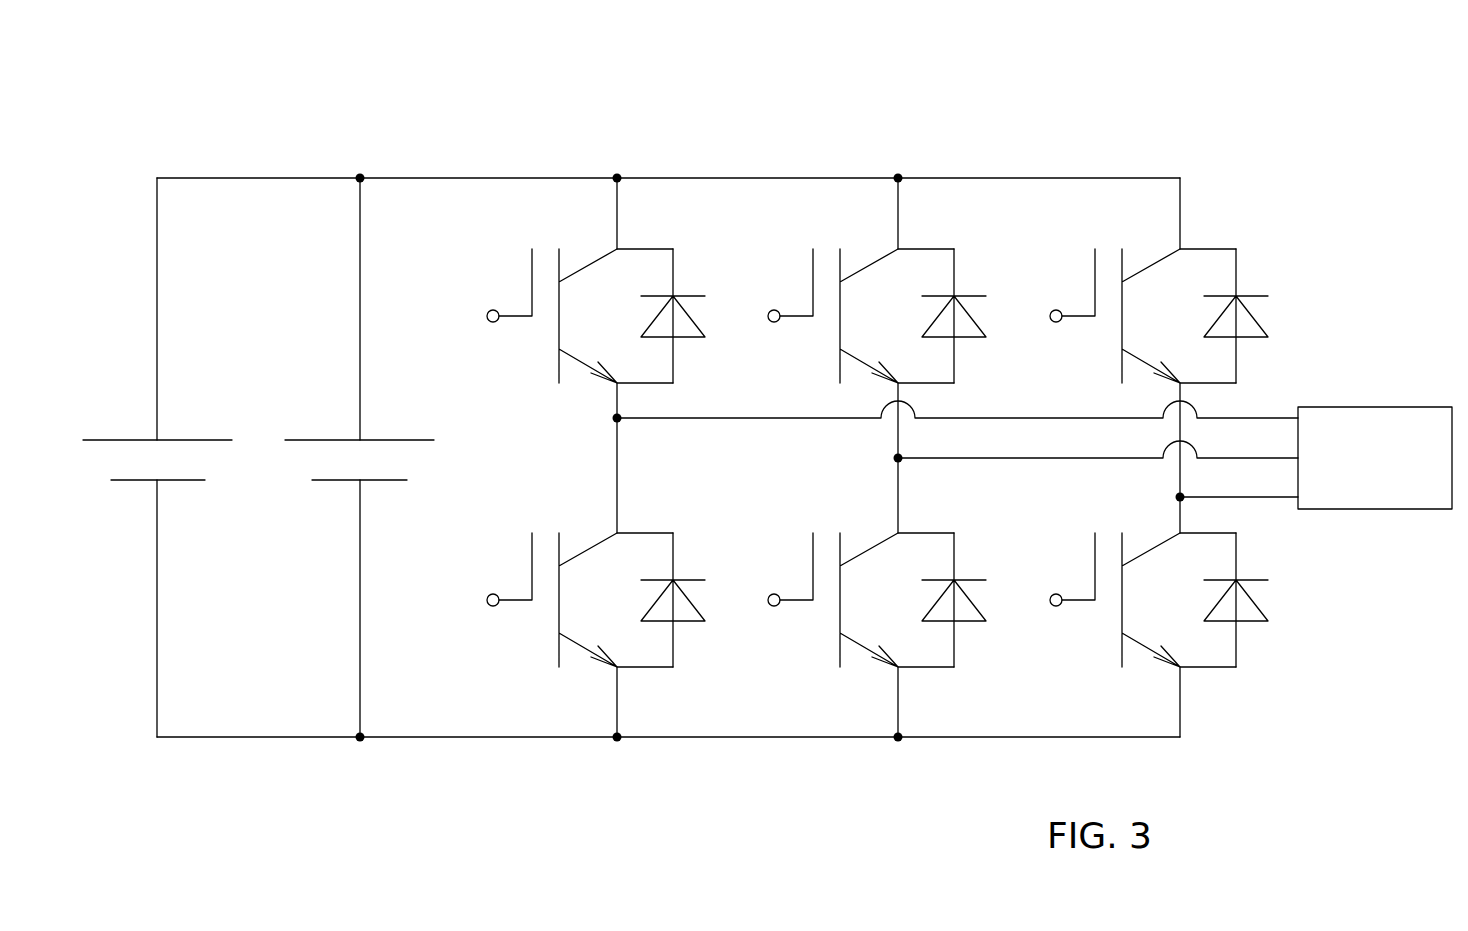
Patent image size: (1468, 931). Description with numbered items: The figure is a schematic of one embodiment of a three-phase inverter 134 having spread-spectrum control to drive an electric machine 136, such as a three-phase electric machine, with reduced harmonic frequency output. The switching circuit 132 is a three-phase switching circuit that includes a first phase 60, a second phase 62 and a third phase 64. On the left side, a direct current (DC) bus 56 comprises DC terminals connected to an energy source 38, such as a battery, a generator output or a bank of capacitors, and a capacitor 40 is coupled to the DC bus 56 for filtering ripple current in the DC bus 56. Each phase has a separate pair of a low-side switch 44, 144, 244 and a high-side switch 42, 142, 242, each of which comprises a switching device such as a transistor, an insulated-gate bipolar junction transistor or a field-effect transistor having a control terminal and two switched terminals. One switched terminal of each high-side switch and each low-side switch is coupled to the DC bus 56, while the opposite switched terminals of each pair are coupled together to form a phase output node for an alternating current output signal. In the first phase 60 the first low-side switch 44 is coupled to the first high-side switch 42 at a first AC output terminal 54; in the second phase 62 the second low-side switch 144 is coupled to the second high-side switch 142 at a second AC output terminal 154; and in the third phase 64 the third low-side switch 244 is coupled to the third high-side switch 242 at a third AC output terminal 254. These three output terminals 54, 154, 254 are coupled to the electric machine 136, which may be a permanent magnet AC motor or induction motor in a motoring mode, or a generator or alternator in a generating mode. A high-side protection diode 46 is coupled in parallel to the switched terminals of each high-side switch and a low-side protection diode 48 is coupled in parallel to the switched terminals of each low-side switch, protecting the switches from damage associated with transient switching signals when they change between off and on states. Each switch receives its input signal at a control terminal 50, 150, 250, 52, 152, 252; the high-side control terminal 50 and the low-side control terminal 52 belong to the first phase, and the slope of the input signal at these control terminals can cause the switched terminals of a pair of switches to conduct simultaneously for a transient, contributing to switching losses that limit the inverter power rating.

The switching circuit 132 is at (757, 72).
The three-phase inverter 134 is at (775, 787).
The direct current (DC) bus 56 is at (427, 178).
The energy source 38 is at (200, 440).
The capacitor 40 is at (402, 440).
The first phase 60 is at (624, 150).
The second phase 62 is at (906, 150).
The third phase 64 is at (1188, 150).
The high-side switch 42 is at (593, 288).
The second high-side switch 142 is at (865, 288).
The third high-side switch 242 is at (1147, 288).
The low-side switch 44 is at (593, 570).
The second low-side switch 144 is at (865, 570).
The third low-side switch 244 is at (1147, 570).
The high-side protection diode 46 is at (965, 326).
The low-side protection diode 48 is at (965, 611).
The high-side control terminal 50 is at (497, 317).
The control terminal 150 is at (775, 317).
The control terminal 250 is at (1057, 316).
The low-side control terminal 52 is at (497, 601).
The control terminal 152 is at (775, 601).
The control terminal 252 is at (1057, 601).
The first AC output terminal 54 is at (616, 418).
The second AC output terminal 154 is at (897, 458).
The third AC output terminal 254 is at (1182, 497).
The electric machine 136 is at (1373, 407).